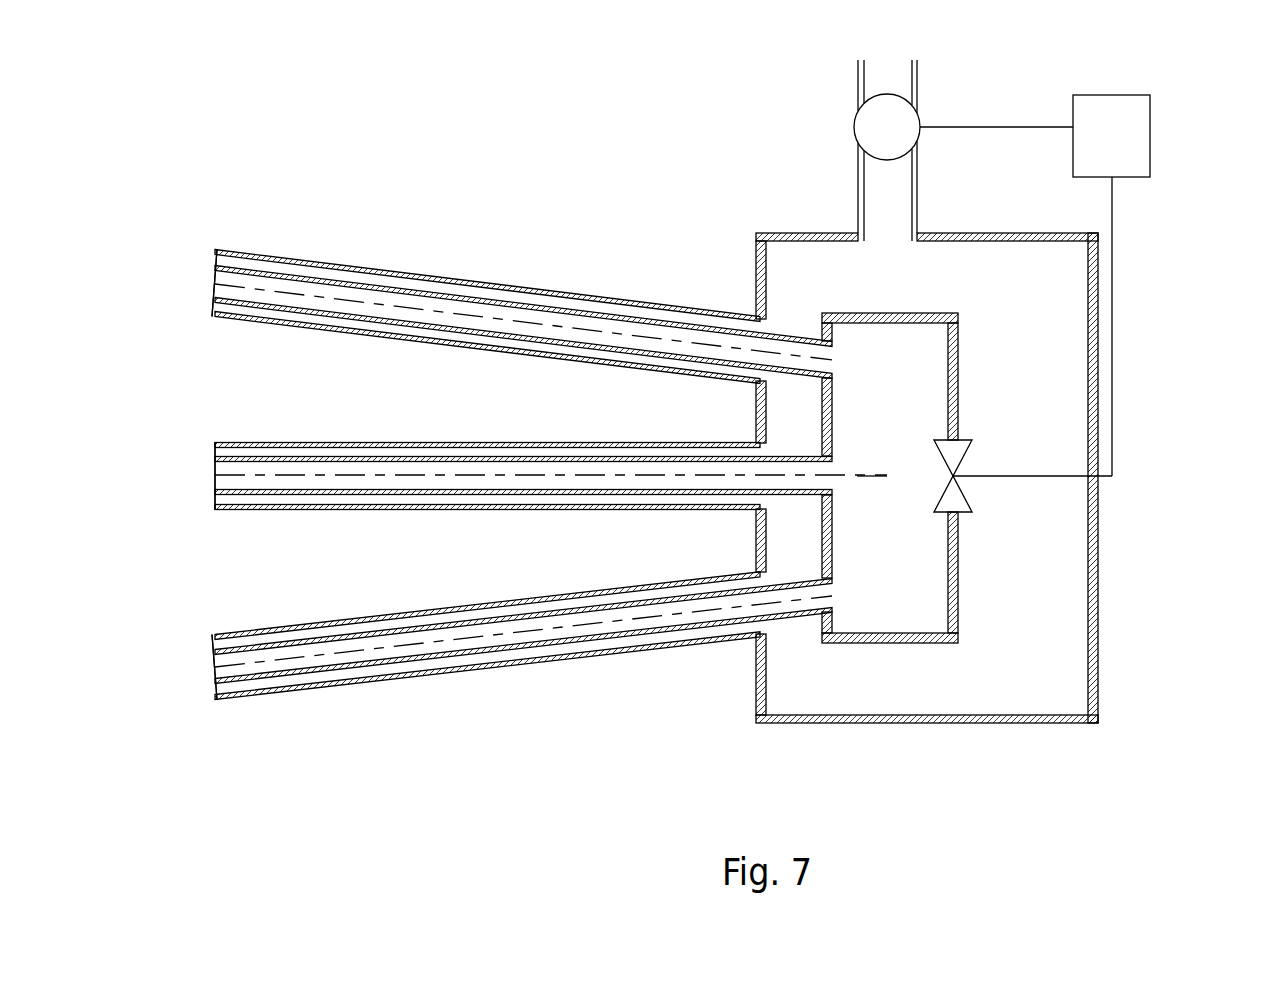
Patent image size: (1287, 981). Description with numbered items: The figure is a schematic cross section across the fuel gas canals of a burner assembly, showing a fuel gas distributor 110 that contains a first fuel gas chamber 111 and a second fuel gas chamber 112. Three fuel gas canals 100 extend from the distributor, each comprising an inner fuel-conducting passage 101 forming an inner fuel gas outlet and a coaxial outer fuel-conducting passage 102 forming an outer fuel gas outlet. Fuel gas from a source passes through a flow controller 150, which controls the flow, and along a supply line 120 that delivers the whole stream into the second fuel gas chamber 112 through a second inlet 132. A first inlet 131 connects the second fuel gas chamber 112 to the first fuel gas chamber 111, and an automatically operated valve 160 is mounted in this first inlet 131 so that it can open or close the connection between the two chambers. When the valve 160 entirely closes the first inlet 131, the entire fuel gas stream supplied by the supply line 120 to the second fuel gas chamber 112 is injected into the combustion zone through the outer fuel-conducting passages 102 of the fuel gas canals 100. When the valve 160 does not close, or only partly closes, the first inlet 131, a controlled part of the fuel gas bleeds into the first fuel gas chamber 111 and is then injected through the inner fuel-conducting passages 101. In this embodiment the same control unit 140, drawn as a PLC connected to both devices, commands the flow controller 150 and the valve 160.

The fuel gas canal 100 is at (410, 252).
The inner fuel-conducting passage 101 is at (205, 283).
The outer fuel-conducting passage 102 is at (413, 333).
The fuel gas distributor 110 is at (1155, 380).
The first fuel gas chamber 111 is at (890, 478).
The second fuel gas chamber 112 is at (927, 685).
The supply line 120 is at (873, 80).
The first inlet 131 is at (926, 512).
The second inlet 132 is at (875, 238).
The PLC controller 140 is at (1092, 163).
The flow controller 150 is at (963, 127).
The automatic valve 160 is at (955, 455).